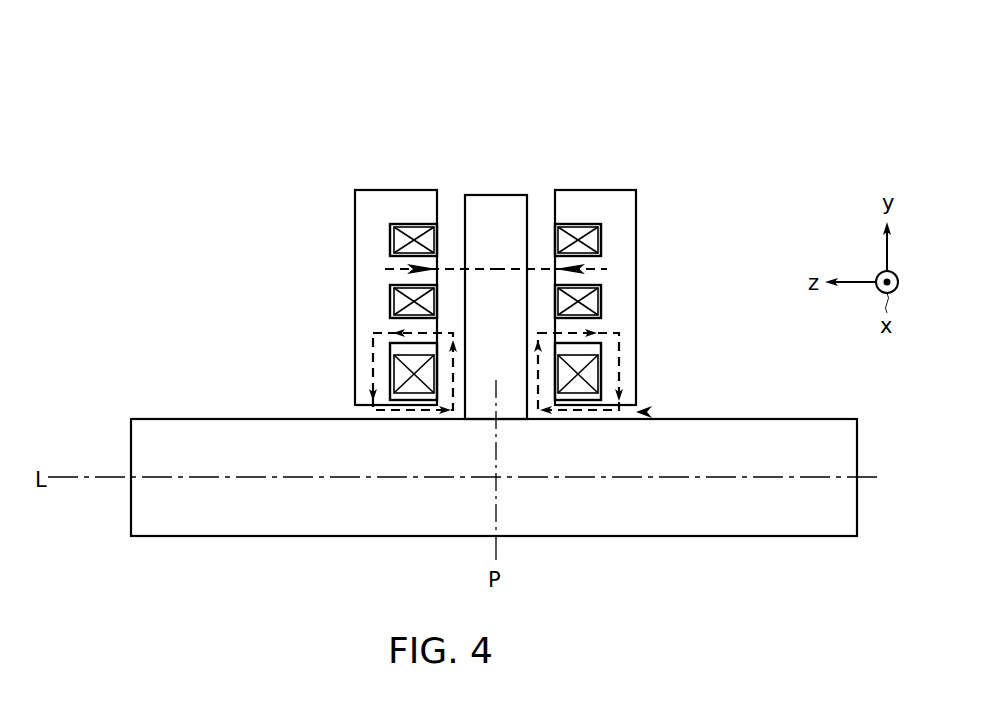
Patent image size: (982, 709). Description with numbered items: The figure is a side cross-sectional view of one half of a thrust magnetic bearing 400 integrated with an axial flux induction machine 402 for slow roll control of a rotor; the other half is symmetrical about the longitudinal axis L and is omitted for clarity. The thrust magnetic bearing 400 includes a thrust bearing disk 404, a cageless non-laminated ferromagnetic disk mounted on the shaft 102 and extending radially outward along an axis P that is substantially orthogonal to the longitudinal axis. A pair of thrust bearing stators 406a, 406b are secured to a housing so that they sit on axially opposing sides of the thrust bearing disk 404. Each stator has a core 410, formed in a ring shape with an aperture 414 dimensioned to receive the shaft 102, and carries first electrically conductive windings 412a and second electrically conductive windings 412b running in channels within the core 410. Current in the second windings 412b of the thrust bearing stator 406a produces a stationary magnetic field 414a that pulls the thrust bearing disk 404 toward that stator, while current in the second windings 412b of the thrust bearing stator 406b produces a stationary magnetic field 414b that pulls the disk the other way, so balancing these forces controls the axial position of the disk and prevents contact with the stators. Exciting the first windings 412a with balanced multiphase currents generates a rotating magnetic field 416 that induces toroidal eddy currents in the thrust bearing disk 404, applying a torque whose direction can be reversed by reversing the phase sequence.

The thrust magnetic bearing 400 is at (752, 116).
The shaft 102 is at (213, 458).
The axial flux induction machine 402 is at (643, 92).
The thrust bearing disk 404 is at (516, 314).
The thrust bearing stator 406a is at (403, 190).
The thrust bearing stator 406b is at (602, 190).
The core 410 is at (407, 218).
The first electrically conductive windings 412a is at (390, 230).
The second electrically conductive windings 412b is at (390, 370).
The aperture 414 is at (650, 412).
The stationary magnetic field 414a is at (387, 270).
The stationary magnetic field 414b is at (607, 269).
The rotating magnetic field 416 is at (620, 363).